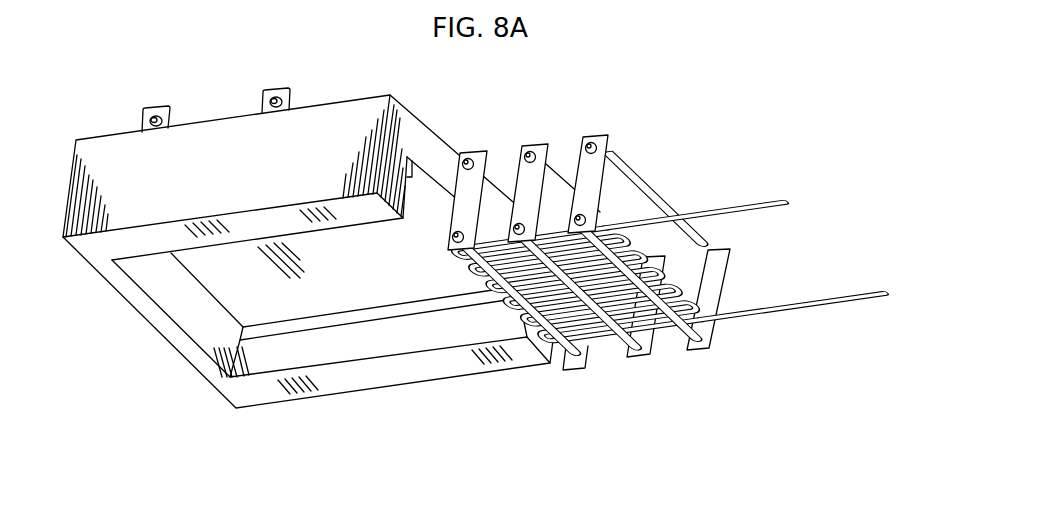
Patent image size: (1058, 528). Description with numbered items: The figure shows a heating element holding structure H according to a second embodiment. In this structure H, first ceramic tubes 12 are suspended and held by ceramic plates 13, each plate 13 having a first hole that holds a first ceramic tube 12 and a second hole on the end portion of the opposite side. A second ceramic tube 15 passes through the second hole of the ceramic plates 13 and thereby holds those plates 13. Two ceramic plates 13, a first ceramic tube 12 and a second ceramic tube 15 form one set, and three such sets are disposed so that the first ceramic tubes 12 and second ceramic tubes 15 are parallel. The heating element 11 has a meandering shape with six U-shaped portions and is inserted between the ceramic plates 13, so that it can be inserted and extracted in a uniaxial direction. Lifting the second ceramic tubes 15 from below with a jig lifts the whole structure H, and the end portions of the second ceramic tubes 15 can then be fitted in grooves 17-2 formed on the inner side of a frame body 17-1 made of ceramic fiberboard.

The heating element 11 is at (800, 296).
The first ceramic tube 12 is at (691, 352).
The ceramic plate 13 is at (546, 193).
The second ceramic tube 15 is at (641, 222).
The frame body 17-1 is at (216, 152).
The groove 17-2 is at (413, 178).
The heating element holding structure H is at (671, 131).